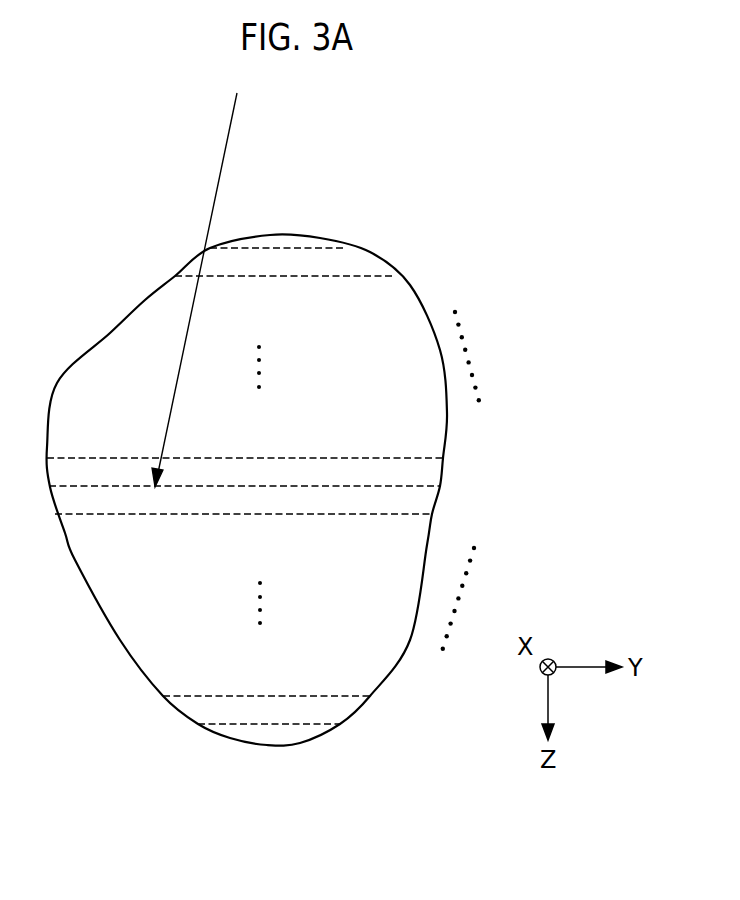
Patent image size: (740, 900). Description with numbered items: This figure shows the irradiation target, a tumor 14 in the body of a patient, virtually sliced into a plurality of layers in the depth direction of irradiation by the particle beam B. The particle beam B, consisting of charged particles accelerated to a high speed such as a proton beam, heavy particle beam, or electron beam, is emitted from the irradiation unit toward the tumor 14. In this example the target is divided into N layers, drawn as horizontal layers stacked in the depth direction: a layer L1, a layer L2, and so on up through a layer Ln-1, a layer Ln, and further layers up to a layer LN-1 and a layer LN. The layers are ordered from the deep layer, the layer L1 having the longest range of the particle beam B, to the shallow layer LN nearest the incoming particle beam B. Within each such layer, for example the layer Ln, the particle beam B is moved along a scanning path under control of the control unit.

The tumor 14 is at (115, 293).
The particle beam B is at (218, 183).
The layer LN is at (277, 247).
The layer LN-1 is at (350, 274).
The layer Ln is at (412, 486).
The layer Ln-1 is at (398, 514).
The layer L2 is at (345, 697).
The layer L1 is at (318, 723).